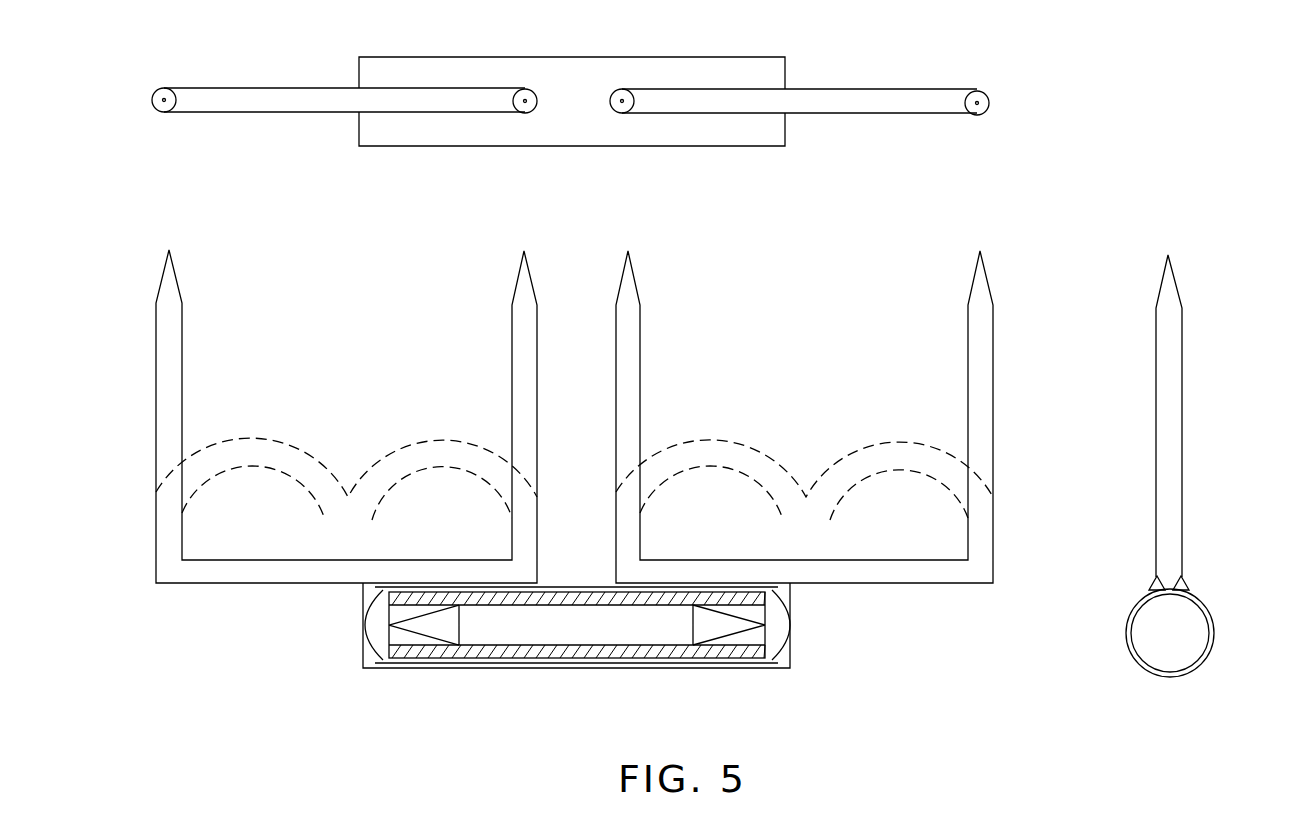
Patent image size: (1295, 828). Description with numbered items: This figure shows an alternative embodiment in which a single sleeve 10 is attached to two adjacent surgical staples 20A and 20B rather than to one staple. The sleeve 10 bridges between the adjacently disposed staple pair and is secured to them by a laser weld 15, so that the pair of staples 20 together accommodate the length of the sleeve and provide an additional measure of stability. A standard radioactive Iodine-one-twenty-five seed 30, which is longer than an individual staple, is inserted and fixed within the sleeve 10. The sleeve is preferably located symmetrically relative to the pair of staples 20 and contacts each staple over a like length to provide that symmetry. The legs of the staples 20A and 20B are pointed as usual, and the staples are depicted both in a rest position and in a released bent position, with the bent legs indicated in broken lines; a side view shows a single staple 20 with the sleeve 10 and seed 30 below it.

The sleeve 10 is at (572, 149).
The laser weld 15 is at (1152, 588).
The surgical staple 20 is at (1186, 388).
The first adjacent staple 20A is at (317, 84).
The second adjacent staple 20B is at (826, 86).
The radioactive Iodine-125 seed 30 is at (359, 645).